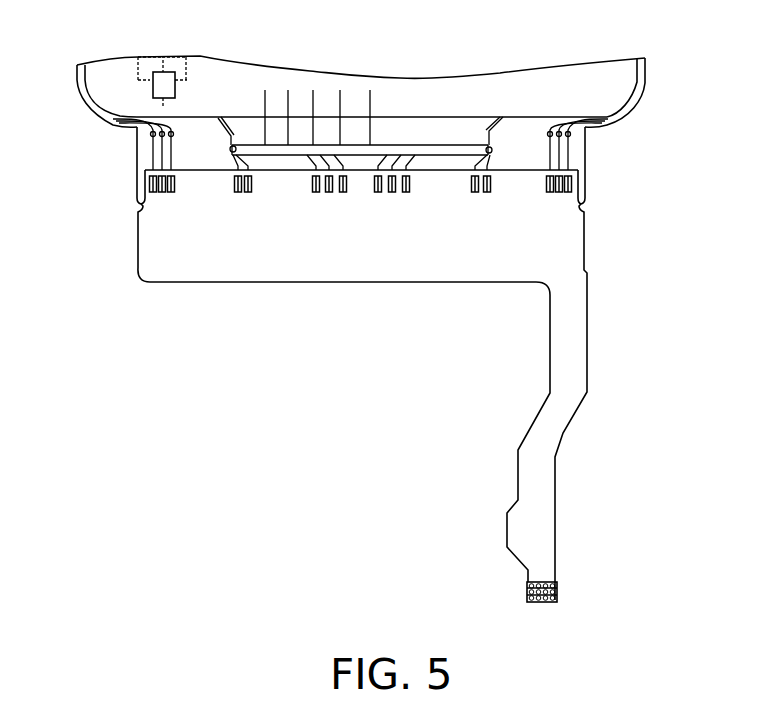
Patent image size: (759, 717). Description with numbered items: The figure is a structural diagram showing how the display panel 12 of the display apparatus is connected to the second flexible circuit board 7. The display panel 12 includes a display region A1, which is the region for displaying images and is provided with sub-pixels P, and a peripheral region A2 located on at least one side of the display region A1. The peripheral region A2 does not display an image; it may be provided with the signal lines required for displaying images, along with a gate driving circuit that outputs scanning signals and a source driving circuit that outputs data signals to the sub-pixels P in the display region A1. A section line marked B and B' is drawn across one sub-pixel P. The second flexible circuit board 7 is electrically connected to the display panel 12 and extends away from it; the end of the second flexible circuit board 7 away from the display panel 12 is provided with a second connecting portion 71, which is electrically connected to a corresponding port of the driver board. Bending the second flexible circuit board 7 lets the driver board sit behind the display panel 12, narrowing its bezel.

The display panel 12 is at (367, 75).
The second flexible circuit board 7 is at (158, 238).
The second connecting portion 71 is at (558, 596).
The sub-pixels P is at (170, 89).
The display region A1 is at (249, 82).
The peripheral region A2 is at (648, 88).
The section line B is at (146, 48).
The section line B' is at (180, 48).